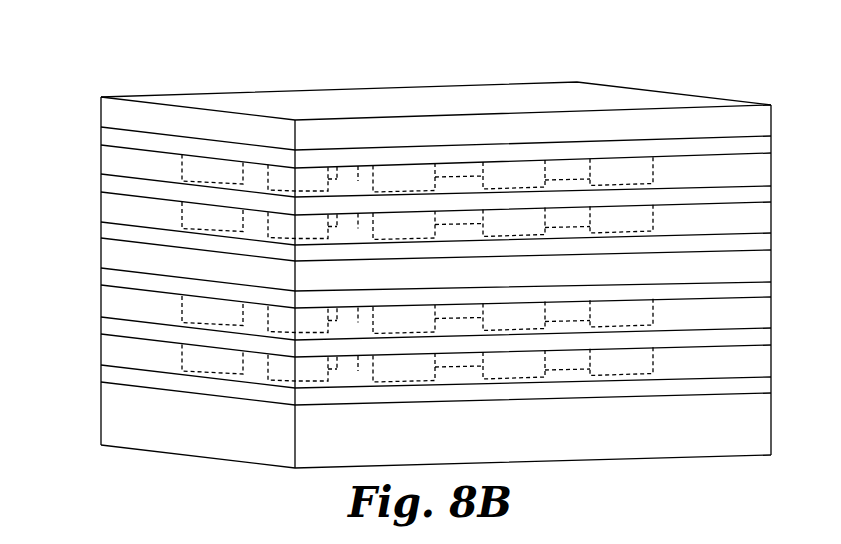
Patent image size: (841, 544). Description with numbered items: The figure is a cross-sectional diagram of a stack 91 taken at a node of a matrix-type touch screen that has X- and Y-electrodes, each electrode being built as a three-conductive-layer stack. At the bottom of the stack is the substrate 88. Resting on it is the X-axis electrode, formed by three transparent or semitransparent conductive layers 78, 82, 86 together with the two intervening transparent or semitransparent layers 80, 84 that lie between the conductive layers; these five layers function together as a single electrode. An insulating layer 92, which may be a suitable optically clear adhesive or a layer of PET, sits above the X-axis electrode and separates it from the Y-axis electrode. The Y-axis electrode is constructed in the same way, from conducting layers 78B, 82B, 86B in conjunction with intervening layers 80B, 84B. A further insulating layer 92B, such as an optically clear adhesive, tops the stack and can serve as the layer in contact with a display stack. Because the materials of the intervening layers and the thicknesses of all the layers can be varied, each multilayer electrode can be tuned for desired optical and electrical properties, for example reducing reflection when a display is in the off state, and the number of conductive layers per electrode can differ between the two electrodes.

The stack 91 is at (181, 54).
The insulating layer 92B is at (110, 110).
The conducting layer 78B is at (110, 137).
The intervening layer 80B is at (110, 162).
The conducting layer 82B is at (110, 183).
The intervening layer 84B is at (110, 207).
The conducting layer 86B is at (110, 232).
The insulating layer 92 is at (110, 255).
The conductive layer 78 is at (110, 280).
The intervening layer 80 is at (110, 305).
The conductive layer 82 is at (110, 330).
The intervening layer 84 is at (110, 350).
The conductive layer 86 is at (110, 375).
The substrate 88 is at (110, 417).